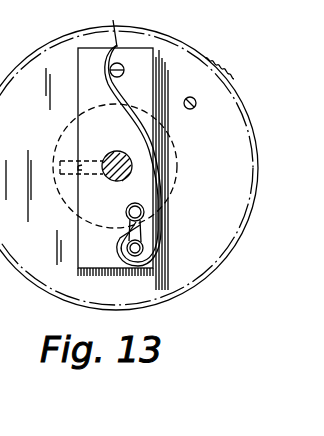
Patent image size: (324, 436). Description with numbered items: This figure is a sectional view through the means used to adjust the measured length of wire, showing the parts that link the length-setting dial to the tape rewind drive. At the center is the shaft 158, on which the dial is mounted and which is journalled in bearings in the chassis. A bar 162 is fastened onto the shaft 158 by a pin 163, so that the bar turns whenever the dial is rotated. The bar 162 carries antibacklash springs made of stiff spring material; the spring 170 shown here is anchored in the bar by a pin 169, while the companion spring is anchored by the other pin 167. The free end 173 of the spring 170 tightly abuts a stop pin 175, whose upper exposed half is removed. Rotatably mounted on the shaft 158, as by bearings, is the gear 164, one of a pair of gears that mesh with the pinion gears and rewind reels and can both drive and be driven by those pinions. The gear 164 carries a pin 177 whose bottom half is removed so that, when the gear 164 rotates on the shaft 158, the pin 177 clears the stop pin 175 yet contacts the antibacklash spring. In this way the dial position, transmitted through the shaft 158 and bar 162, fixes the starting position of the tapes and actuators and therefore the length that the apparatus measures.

The shaft 158 is at (105, 154).
The bar 162 is at (76, 215).
The pin 163 is at (61, 166).
The gear 164 is at (235, 77).
The pin 167 is at (126, 210).
The pin 169 is at (127, 249).
The antibacklash spring 170 is at (158, 135).
The free end 173 is at (102, 25).
The stop pin 175 is at (113, 91).
The pin 177 is at (194, 108).